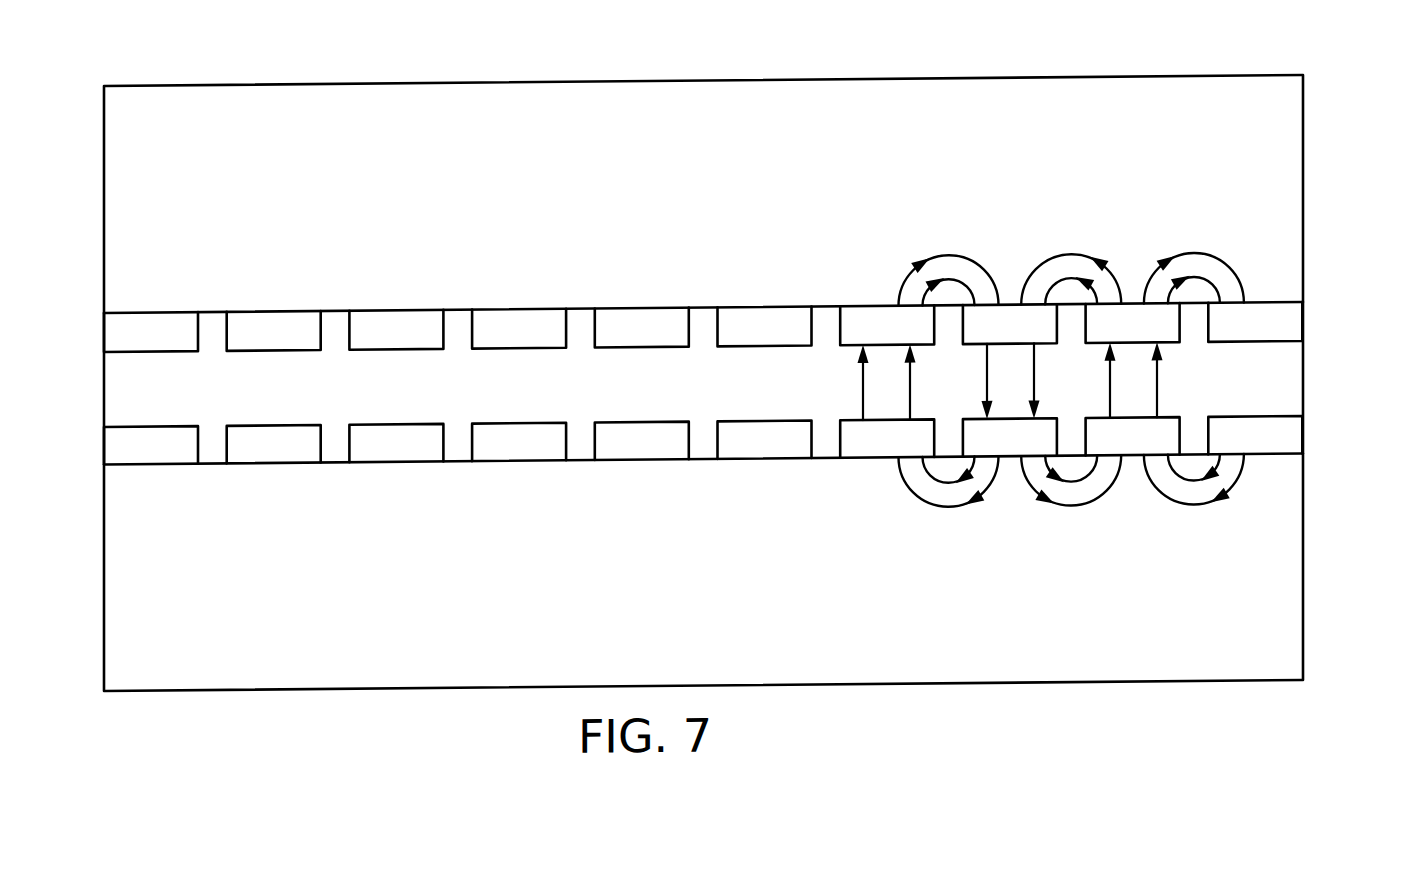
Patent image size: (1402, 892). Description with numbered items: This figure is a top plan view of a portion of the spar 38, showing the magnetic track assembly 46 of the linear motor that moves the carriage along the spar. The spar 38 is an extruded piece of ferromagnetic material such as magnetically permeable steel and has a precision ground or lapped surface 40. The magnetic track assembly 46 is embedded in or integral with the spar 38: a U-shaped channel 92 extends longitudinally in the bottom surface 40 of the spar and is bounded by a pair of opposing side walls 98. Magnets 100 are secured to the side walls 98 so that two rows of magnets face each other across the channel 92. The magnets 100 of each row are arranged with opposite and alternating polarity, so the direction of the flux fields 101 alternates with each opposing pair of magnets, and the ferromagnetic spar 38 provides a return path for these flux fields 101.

The spar 38 is at (971, 133).
The precision ground surface 40 is at (708, 172).
The magnetic track assembly 46 is at (1318, 371).
The U-shaped channel 92 is at (153, 396).
The side walls 98 is at (330, 315).
The magnets 100 is at (738, 329).
The flux fields 101 is at (1052, 277).